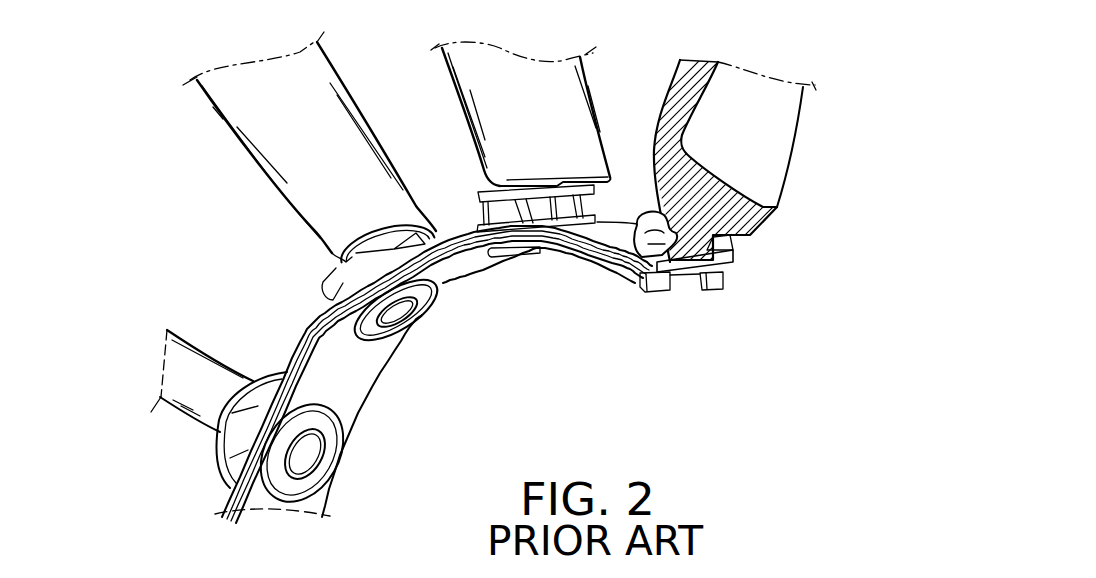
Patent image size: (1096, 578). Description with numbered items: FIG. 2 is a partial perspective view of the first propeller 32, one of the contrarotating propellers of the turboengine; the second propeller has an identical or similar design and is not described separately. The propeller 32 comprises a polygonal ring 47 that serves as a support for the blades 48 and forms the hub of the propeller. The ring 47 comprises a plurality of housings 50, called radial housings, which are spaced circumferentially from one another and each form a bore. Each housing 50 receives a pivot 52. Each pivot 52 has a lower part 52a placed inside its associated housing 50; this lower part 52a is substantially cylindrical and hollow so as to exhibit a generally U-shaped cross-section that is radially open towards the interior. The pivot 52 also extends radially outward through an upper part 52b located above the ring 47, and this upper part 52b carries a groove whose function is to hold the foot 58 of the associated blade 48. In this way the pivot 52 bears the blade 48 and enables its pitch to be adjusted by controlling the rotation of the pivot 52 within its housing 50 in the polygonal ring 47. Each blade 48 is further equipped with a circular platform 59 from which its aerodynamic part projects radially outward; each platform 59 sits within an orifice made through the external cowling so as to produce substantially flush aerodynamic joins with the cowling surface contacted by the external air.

The first propeller 32 is at (752, 50).
The blade 48 is at (755, 163).
The polygonal ring 47 is at (357, 387).
The platform 59 is at (485, 190).
The foot 58 is at (668, 215).
The pivot 52 is at (735, 268).
The lower part 52a is at (442, 298).
The upper part 52b is at (636, 288).
The housing 50 is at (670, 292).